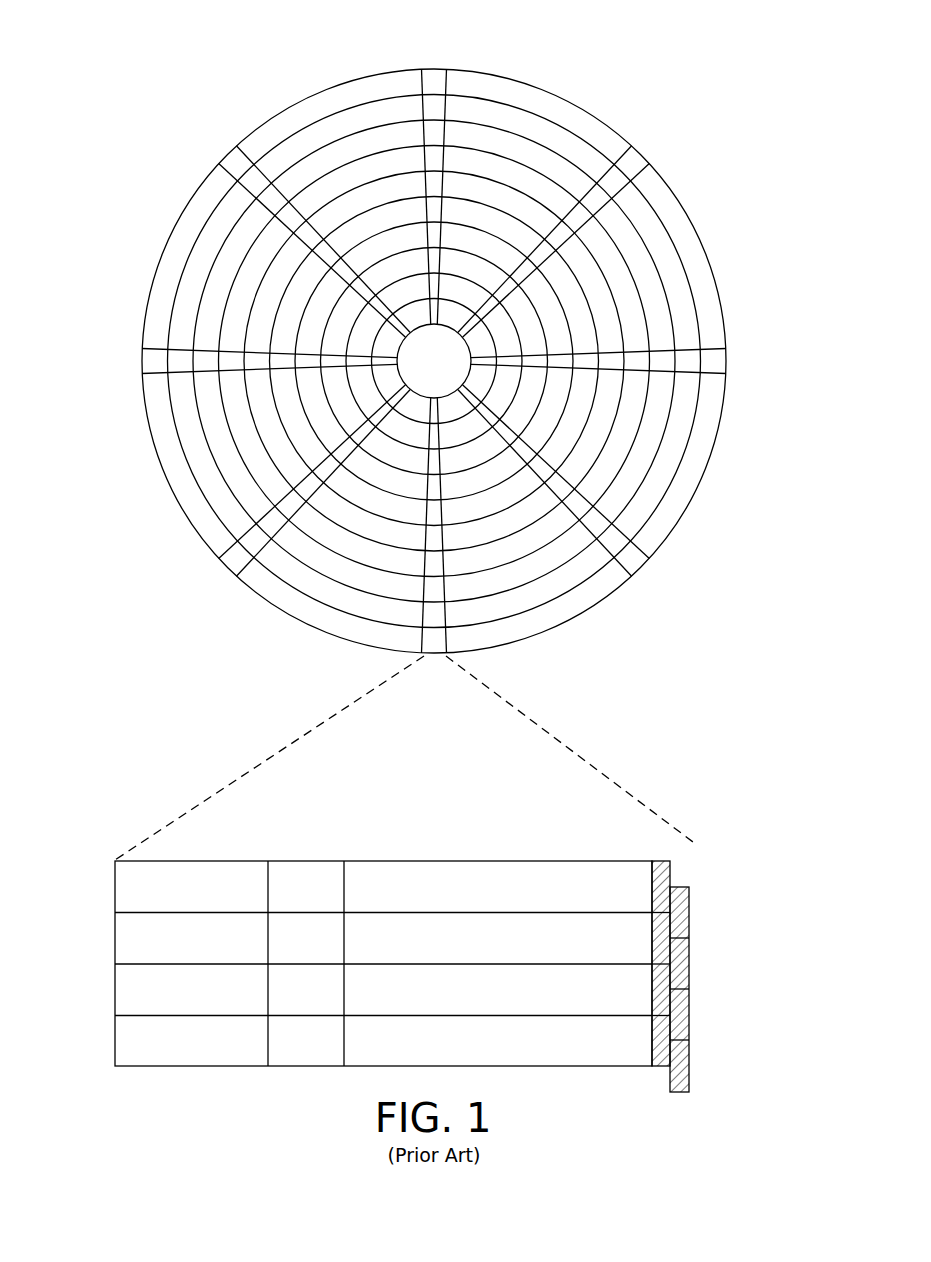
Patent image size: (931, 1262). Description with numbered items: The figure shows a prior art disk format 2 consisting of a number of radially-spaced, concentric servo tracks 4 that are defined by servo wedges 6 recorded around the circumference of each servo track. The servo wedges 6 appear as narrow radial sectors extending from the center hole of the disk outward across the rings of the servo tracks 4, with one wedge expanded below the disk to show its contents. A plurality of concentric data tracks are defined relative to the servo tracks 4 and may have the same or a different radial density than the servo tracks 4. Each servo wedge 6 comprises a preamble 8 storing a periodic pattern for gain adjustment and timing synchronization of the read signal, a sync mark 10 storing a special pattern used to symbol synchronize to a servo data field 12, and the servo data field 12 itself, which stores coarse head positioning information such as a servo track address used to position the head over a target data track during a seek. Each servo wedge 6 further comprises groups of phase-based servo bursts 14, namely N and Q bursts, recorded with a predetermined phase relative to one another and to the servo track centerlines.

The disk format 2 is at (213, 69).
The servo tracks 4 is at (533, 128).
The servo wedges 6 is at (299, 724).
The preamble 8 is at (197, 860).
The sync mark 10 is at (307, 860).
The servo data field 12 is at (487, 860).
The phase-based servo bursts 14 is at (690, 858).